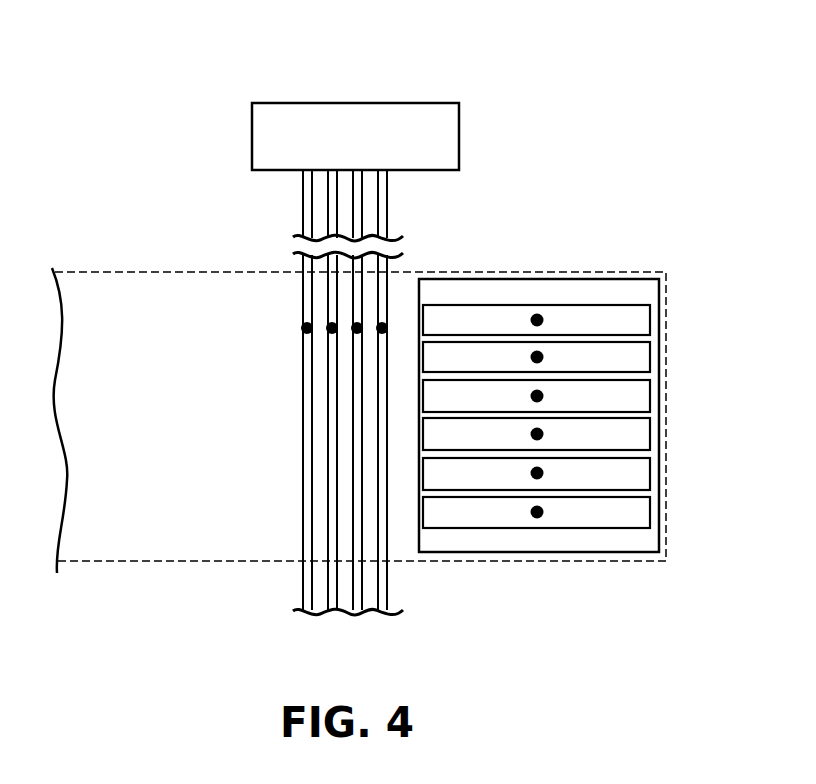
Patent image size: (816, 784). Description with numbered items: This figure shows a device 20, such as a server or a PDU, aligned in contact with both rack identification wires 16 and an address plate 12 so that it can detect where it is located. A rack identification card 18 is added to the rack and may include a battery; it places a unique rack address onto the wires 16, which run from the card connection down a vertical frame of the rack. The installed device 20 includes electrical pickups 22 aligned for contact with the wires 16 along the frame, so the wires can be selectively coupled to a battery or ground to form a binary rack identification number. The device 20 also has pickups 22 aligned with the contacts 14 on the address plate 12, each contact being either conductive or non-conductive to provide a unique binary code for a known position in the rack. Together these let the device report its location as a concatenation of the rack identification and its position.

The address plate 12 is at (528, 279).
The contacts 14 is at (650, 320).
The rack identification wires 16 is at (312, 203).
The rack identification card 18 is at (368, 103).
The device 20 is at (143, 272).
The electrical pickups 22 is at (328, 334).